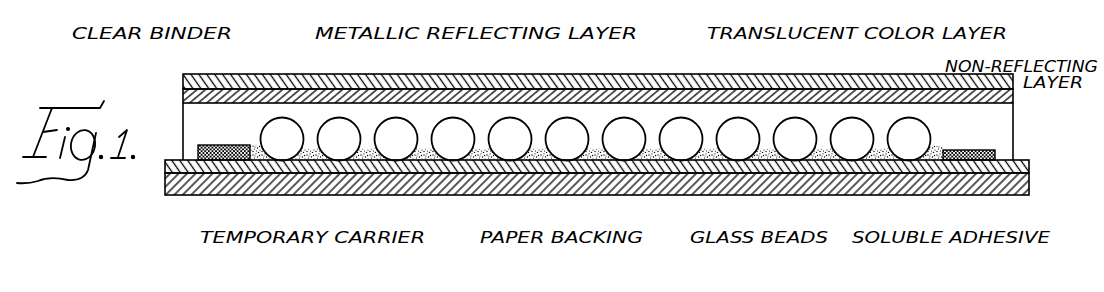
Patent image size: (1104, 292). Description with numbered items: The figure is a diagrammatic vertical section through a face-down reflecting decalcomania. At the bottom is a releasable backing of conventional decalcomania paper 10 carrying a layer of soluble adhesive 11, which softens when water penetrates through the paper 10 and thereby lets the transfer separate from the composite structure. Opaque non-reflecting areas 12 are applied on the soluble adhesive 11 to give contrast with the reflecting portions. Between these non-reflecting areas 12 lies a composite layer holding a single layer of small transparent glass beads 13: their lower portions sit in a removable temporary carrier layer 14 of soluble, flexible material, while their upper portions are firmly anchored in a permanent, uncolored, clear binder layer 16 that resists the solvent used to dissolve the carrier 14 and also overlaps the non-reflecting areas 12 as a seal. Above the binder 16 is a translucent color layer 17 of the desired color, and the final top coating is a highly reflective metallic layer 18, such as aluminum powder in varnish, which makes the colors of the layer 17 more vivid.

The decalcomania paper 10 is at (577, 185).
The soluble adhesive layer 11 is at (923, 163).
The non-reflecting areas 12 is at (998, 152).
The glass beads 13 is at (792, 152).
The temporary carrier layer 14 is at (367, 161).
The clear binder layer 16 is at (197, 128).
The translucent color layer 17 is at (853, 102).
The metallic reflective layer 18 is at (467, 87).